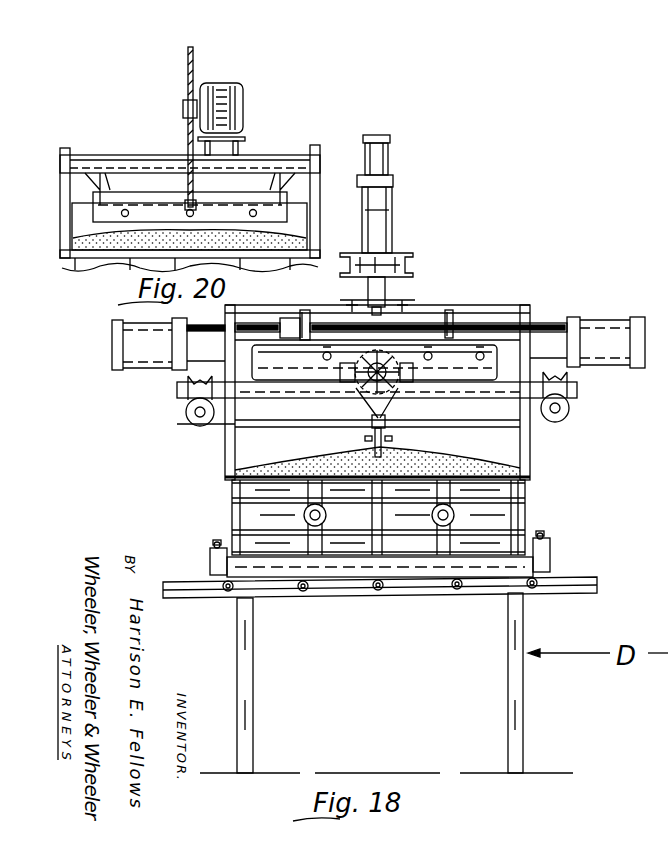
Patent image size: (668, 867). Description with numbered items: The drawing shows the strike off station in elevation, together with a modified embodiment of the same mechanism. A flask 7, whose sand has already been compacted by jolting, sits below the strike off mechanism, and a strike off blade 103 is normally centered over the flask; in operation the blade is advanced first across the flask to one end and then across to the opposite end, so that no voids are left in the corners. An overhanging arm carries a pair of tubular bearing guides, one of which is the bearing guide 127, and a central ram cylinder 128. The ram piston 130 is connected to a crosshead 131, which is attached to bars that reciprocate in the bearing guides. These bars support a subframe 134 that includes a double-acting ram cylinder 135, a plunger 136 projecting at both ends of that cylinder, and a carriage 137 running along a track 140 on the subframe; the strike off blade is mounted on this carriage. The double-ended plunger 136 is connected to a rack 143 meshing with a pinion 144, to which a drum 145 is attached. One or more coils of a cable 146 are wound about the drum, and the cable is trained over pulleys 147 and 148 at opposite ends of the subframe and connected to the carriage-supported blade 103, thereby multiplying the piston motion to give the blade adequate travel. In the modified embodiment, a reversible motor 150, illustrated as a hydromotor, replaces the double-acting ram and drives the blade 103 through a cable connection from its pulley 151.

In FIG. 18, the flask 7 is at (527, 514).
In FIG. 20, the strike off blade 103 is at (107, 215).
In FIG. 18, the strike off blade 103 is at (387, 432).
In FIG. 18, the tubular bearing guide 127 is at (393, 232).
In FIG. 18, the central ram cylinder 128 is at (390, 153).
In FIG. 18, the ram piston 130 is at (385, 291).
In FIG. 18, the crosshead 131 is at (355, 304).
In FIG. 18, the subframe 134 is at (465, 342).
In FIG. 18, the double-acting ram cylinder 135 is at (453, 311).
In FIG. 18, the plunger 136 is at (540, 322).
In FIG. 18, the carriage 137 is at (413, 393).
In FIG. 18, the track 140 is at (490, 392).
In FIG. 18, the rack 143 is at (404, 362).
In FIG. 18, the pinion 144 is at (364, 393).
In FIG. 18, the drum 145 is at (352, 364).
In FIG. 18, the cable 146 is at (473, 428).
In FIG. 18, the pulley 147 is at (186, 413).
In FIG. 18, the pulley 148 is at (570, 410).
In FIG. 20, the motor 150 is at (242, 95).
In FIG. 20, the pulley 151 is at (185, 100).